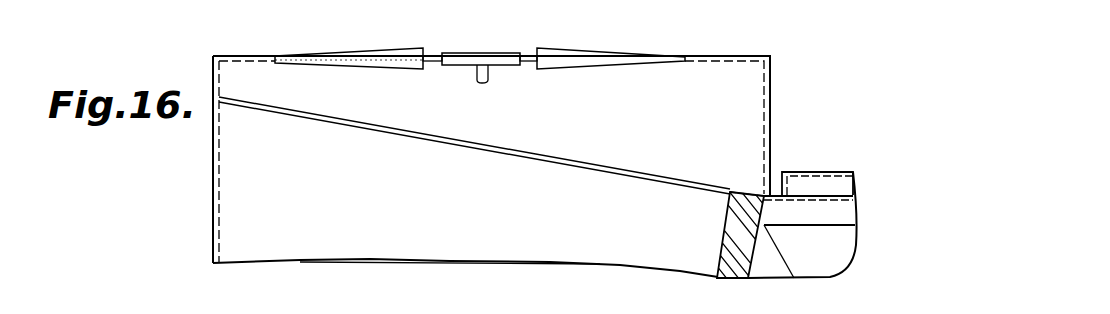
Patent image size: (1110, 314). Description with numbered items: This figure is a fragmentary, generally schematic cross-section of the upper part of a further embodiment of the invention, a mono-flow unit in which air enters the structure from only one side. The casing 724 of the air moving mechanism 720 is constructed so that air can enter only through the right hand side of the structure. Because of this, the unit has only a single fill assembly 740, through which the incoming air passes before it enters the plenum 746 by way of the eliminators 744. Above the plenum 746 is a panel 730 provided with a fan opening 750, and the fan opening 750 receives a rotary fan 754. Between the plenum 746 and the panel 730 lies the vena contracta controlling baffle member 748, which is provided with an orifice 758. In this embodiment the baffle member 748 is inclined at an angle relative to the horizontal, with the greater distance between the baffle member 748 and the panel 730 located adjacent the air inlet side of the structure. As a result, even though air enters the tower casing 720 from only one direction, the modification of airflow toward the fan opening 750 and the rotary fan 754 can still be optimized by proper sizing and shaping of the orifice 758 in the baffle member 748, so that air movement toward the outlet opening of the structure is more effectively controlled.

The air moving mechanism 720 is at (213, 202).
The casing 724 is at (213, 155).
The panel 730 is at (744, 56).
The fill assembly 740 is at (830, 256).
The eliminators 744 is at (725, 253).
The plenum 746 is at (450, 239).
The baffle member 748 is at (719, 193).
The fan opening 750 is at (686, 63).
The rotary fan 754 is at (486, 51).
The orifice 758 is at (270, 108).